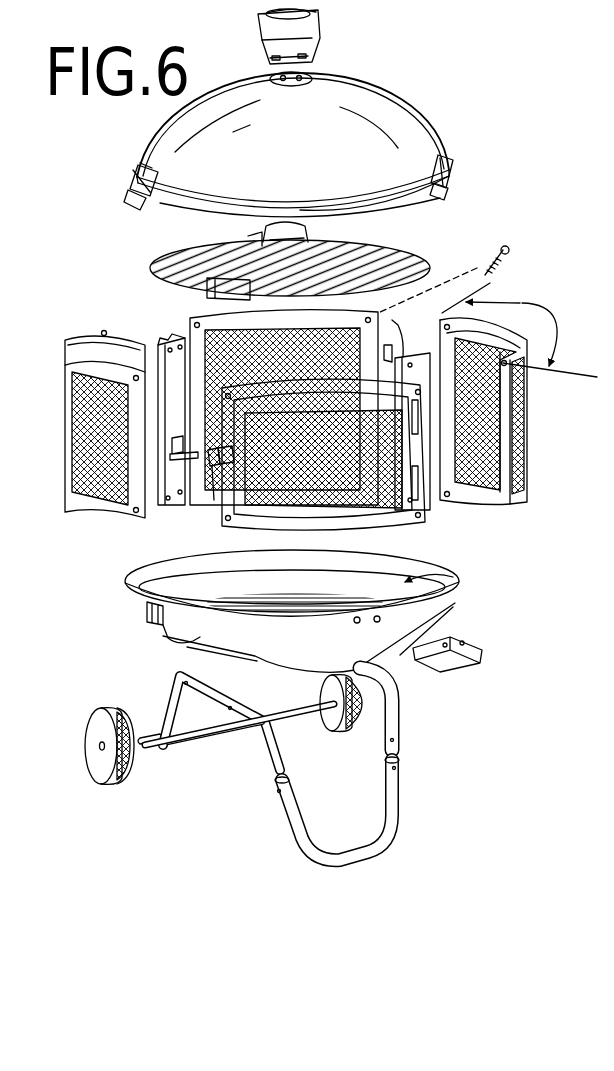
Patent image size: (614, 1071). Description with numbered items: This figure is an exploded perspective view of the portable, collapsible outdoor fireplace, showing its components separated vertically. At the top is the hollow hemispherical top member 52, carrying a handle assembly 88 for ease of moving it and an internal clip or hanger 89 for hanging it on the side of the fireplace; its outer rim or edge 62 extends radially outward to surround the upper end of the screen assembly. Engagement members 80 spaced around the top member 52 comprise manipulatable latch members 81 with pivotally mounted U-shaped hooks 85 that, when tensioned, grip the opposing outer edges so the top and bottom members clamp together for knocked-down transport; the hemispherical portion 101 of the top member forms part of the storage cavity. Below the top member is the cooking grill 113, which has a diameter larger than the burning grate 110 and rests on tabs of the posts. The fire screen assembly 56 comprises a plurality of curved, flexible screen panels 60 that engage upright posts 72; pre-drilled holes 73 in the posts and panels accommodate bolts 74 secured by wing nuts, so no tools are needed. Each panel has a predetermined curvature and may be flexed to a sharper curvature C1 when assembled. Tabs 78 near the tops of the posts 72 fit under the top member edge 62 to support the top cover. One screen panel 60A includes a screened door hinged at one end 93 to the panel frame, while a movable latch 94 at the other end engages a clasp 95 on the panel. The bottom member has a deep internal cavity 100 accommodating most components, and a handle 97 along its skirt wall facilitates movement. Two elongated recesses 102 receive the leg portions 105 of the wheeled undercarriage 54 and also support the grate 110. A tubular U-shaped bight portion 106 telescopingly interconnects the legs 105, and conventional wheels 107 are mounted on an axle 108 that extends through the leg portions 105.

The top member 52 is at (386, 122).
The wheeled undercarriage 54 is at (156, 667).
The fire screen assembly 56 is at (62, 370).
The screen panel 60 is at (70, 460).
The screen panel with door 60A is at (408, 523).
The top member outer edge 62 is at (405, 196).
The upright post 72 is at (176, 506).
The pre-drilled hole 73 is at (103, 330).
The bolt 74 is at (509, 246).
The tab 78 is at (310, 407).
The engagement member 80 is at (158, 172).
The latch member 81 is at (148, 165).
The U-shaped hook 85 is at (130, 195).
The handle assembly 88 is at (320, 30).
The internal clip or hanger 89 is at (245, 232).
The hinged end 93 is at (420, 484).
The movable latch 94 is at (226, 466).
The clasp 95 is at (212, 470).
The handle 97 is at (485, 656).
The internal cavity 100 is at (458, 577).
The hemispherical portion 101 is at (190, 206).
The elongated recess 102 is at (175, 643).
The leg portion 105 is at (262, 740).
The tubular U-shaped bight portion 106 is at (398, 797).
The wheel 107 is at (92, 736).
The axle 108 is at (296, 720).
The grate 110 is at (380, 606).
The cooking grill 113 is at (152, 272).
The sharper curvature C1 is at (531, 333).